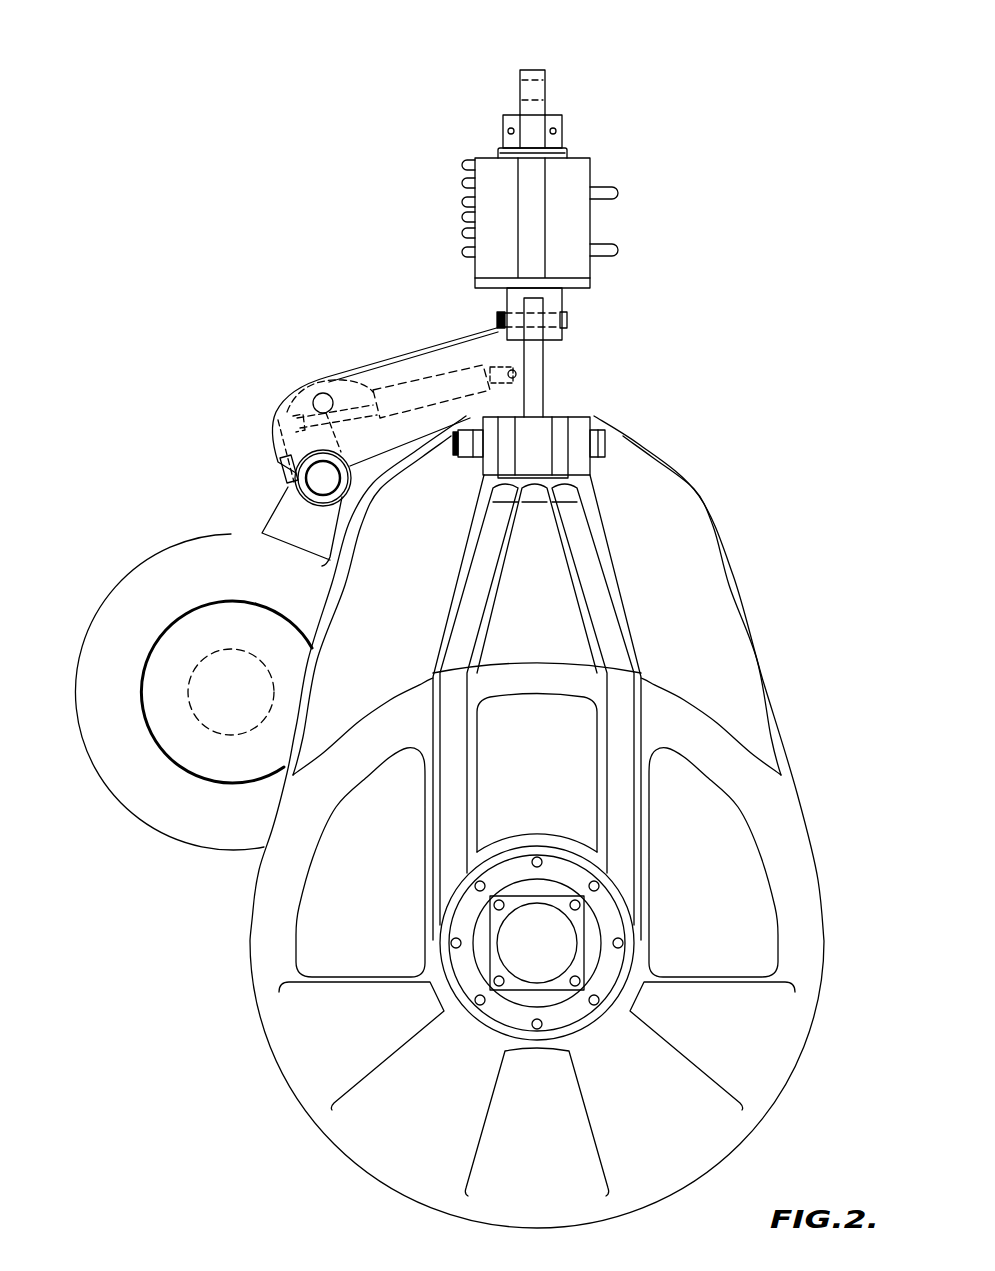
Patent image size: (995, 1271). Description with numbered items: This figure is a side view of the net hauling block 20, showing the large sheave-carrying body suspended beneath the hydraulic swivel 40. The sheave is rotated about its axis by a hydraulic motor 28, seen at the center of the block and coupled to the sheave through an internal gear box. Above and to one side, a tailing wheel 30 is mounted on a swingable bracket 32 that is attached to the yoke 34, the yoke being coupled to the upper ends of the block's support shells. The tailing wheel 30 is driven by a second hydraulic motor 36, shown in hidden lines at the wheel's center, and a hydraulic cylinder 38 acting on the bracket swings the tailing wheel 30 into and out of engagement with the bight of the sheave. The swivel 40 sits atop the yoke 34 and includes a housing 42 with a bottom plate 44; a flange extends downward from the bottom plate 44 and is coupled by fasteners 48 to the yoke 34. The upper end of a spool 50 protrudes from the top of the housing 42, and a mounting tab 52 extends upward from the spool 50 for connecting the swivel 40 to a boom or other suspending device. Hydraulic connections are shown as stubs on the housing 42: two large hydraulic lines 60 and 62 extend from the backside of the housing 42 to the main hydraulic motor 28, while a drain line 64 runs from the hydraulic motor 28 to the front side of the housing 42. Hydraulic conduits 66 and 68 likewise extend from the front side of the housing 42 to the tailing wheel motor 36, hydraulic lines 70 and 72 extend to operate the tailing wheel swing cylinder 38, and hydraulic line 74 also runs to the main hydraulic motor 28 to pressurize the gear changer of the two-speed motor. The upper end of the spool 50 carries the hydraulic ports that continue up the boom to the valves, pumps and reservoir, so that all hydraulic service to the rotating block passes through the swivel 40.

The net hauling block 20 is at (813, 650).
The hydraulic motor 28 is at (549, 956).
The tailing wheel 30 is at (183, 553).
The swingable bracket 32 is at (390, 368).
The yoke 34 is at (538, 377).
The second hydraulic motor 36 is at (197, 670).
The hydraulic cylinder 38 is at (332, 377).
The swivel 40 is at (589, 196).
The housing 42 is at (583, 168).
The bottom plate 44 is at (482, 283).
The fasteners 48 is at (565, 320).
The spool 50 is at (567, 150).
The mounting tab 52 is at (520, 82).
The hydraulic line 60 is at (620, 194).
The hydraulic line 62 is at (620, 250).
The drain line 64 is at (462, 165).
The hydraulic conduit 66 is at (462, 183).
The hydraulic conduit 68 is at (462, 252).
The hydraulic line 70 is at (462, 202).
The hydraulic line 72 is at (462, 217).
The hydraulic line 74 is at (462, 233).